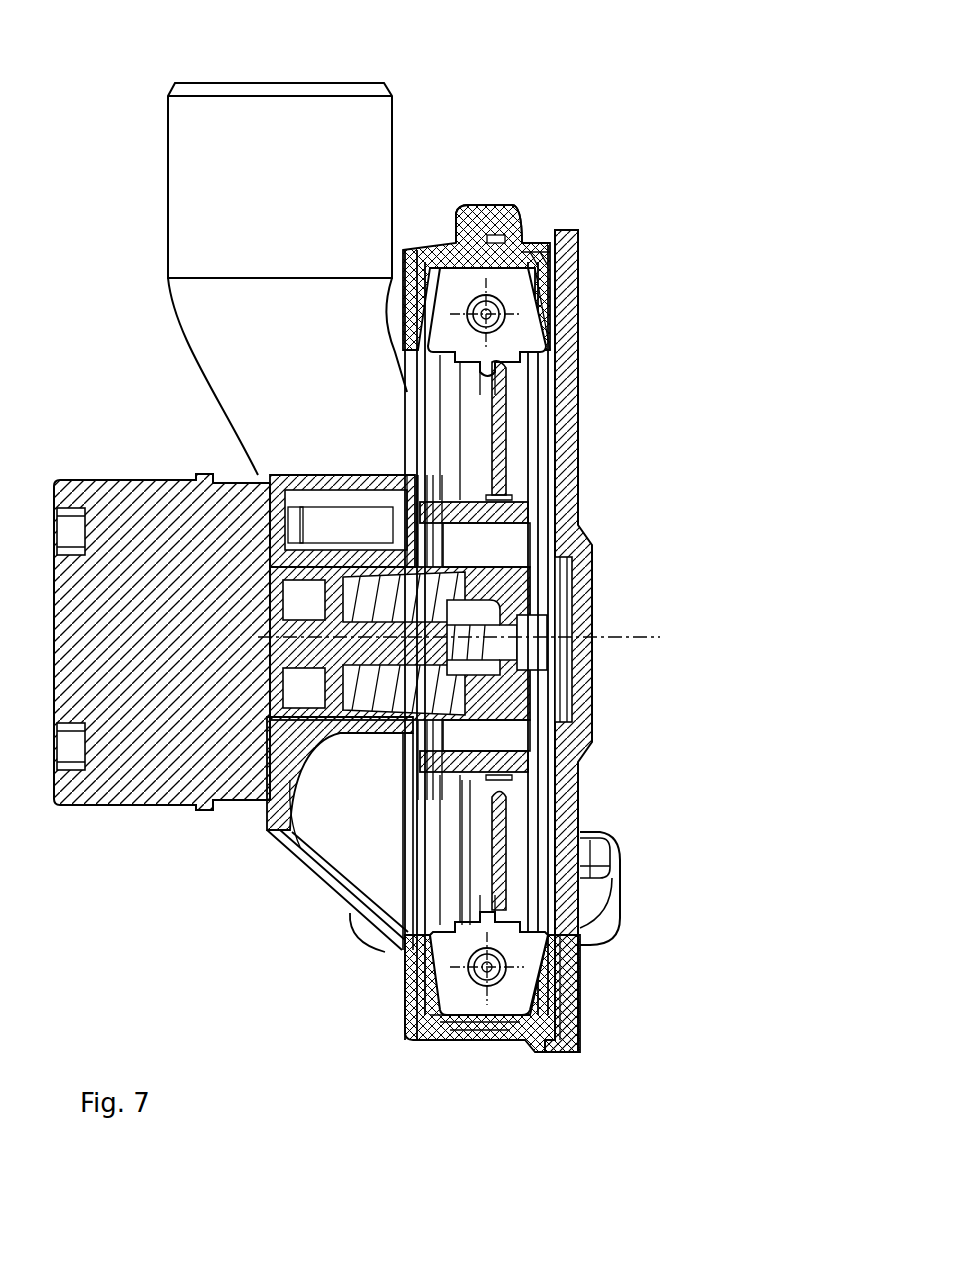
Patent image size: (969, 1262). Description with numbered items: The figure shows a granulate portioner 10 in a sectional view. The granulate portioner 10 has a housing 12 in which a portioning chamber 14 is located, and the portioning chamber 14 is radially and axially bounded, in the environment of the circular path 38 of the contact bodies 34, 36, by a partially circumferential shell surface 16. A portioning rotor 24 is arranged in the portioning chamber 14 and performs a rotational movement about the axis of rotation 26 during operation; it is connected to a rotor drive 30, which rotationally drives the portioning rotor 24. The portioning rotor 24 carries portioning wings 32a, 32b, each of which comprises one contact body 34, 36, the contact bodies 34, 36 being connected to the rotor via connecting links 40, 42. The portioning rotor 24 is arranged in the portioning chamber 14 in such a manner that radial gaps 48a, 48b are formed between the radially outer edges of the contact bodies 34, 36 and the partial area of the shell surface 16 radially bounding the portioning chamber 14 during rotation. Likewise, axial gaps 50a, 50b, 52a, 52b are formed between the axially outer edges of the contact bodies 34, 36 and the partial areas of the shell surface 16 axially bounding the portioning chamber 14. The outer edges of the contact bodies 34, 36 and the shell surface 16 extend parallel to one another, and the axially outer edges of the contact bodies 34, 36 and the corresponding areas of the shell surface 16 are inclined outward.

The granulate portioner 10 is at (603, 88).
The housing 12 is at (485, 212).
The portioning chamber 14 is at (520, 416).
The shell surface 16 is at (533, 838).
The portioning rotor 24 is at (596, 519).
The axis of rotation 26 is at (622, 637).
The rotor drive 30 is at (187, 648).
The portioning wing 32a is at (450, 407).
The portioning wing 32b is at (527, 814).
The contact body 34 is at (527, 333).
The contact body 36 is at (525, 945).
The circular path 38 is at (510, 292).
The connecting link 40 is at (530, 457).
The connecting link 42 is at (500, 836).
The radial gap 48a is at (483, 1022).
The radial gap 48b is at (522, 238).
The axial gap 50a is at (418, 1000).
The axial gap 50b is at (540, 1005).
The axial gap 52a is at (431, 278).
The axial gap 52b is at (552, 302).